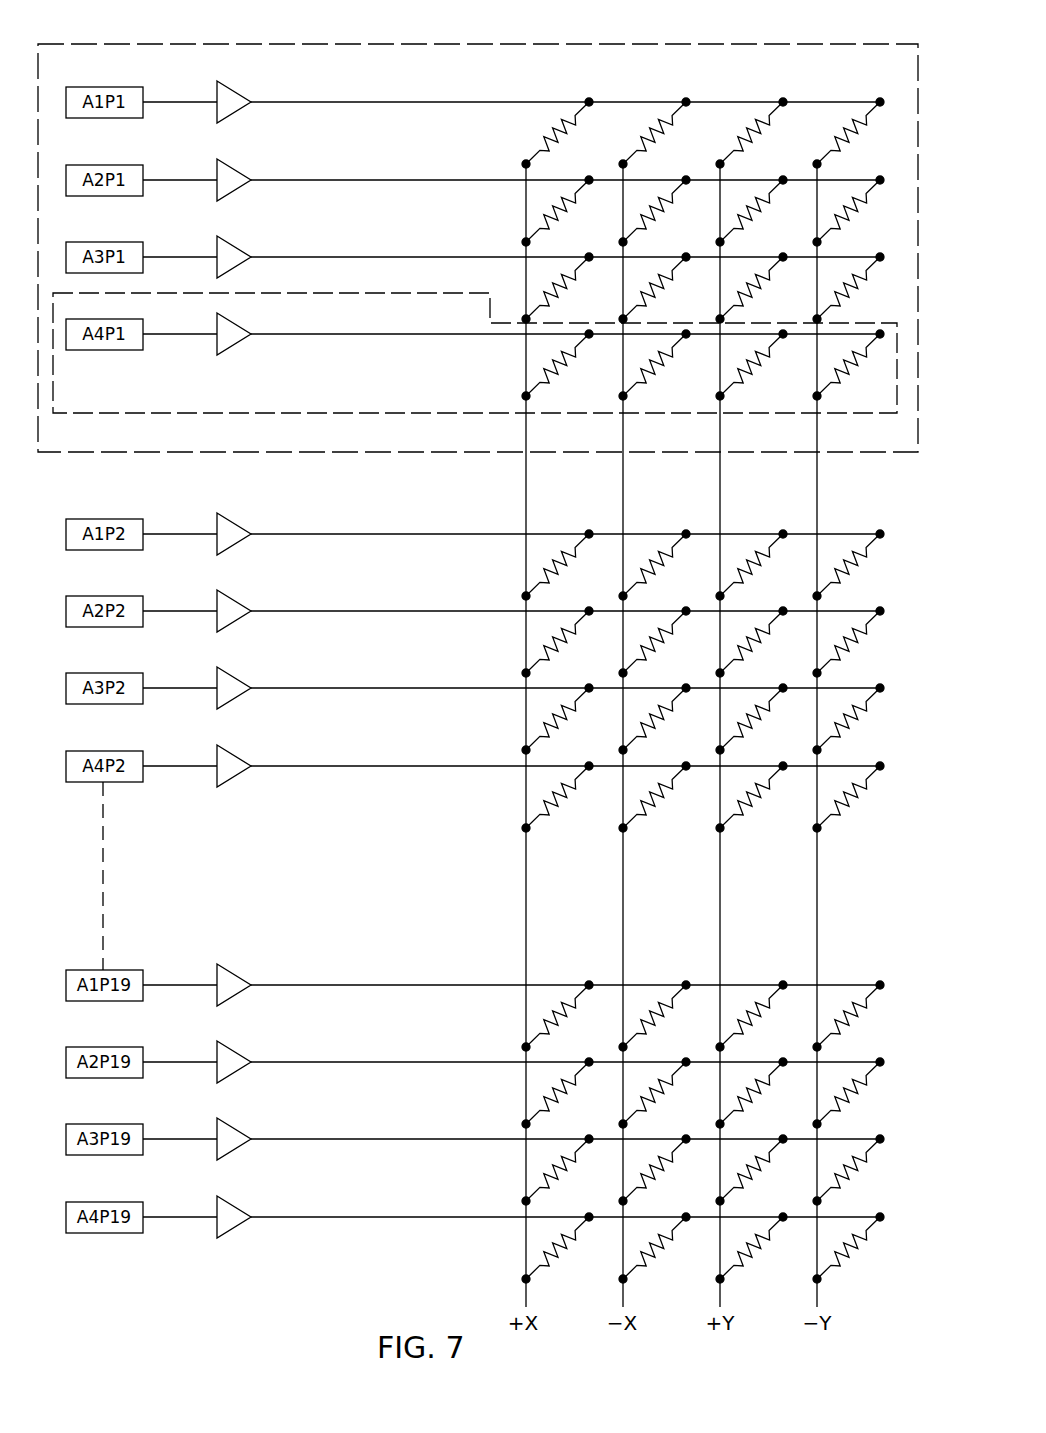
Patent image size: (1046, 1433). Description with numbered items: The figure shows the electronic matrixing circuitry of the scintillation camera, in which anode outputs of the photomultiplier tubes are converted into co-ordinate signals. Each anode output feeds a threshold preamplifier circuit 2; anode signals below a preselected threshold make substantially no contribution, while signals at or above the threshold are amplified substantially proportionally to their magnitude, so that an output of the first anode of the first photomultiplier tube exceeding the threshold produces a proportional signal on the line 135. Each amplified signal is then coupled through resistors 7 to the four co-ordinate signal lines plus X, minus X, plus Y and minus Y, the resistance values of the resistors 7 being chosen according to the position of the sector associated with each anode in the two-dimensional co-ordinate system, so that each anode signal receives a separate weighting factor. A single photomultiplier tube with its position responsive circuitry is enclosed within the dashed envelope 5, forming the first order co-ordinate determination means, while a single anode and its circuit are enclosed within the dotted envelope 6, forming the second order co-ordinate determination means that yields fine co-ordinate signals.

The envelope 5 is at (447, 44).
The envelope 6 is at (405, 413).
The resistors 7 is at (660, 125).
The line 135 is at (287, 102).
The threshold preamplifier circuit 2 is at (234, 659).